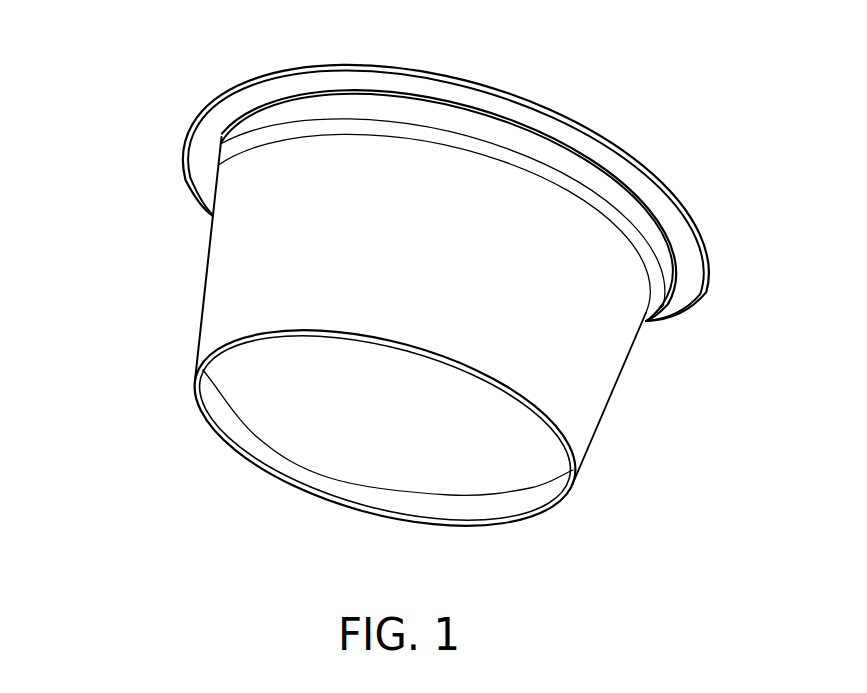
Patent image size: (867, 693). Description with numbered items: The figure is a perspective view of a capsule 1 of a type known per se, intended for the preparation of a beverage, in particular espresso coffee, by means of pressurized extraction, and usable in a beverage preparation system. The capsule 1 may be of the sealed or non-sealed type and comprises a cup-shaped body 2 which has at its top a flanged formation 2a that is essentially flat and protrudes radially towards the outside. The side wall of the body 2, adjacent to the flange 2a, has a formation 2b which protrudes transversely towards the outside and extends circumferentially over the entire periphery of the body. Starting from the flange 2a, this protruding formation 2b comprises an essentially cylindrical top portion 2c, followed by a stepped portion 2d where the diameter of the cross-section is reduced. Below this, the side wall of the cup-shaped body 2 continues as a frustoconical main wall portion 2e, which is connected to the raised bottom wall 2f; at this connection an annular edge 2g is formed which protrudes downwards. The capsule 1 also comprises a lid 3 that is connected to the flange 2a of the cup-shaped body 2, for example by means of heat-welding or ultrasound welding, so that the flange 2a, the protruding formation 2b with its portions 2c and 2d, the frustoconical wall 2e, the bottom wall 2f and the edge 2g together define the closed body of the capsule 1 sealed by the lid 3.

The capsule 1 is at (409, 293).
The cup-shaped body 2 is at (409, 299).
The flanged formation 2a is at (409, 188).
The protruding formation 2b is at (206, 158).
The cylindrical top portion 2c is at (258, 120).
The stepped portion 2d is at (218, 170).
The frustoconical main wall portion 2e is at (214, 307).
The raised bottom wall 2f is at (480, 463).
The annular edge 2g is at (255, 440).
The lid 3 is at (524, 93).